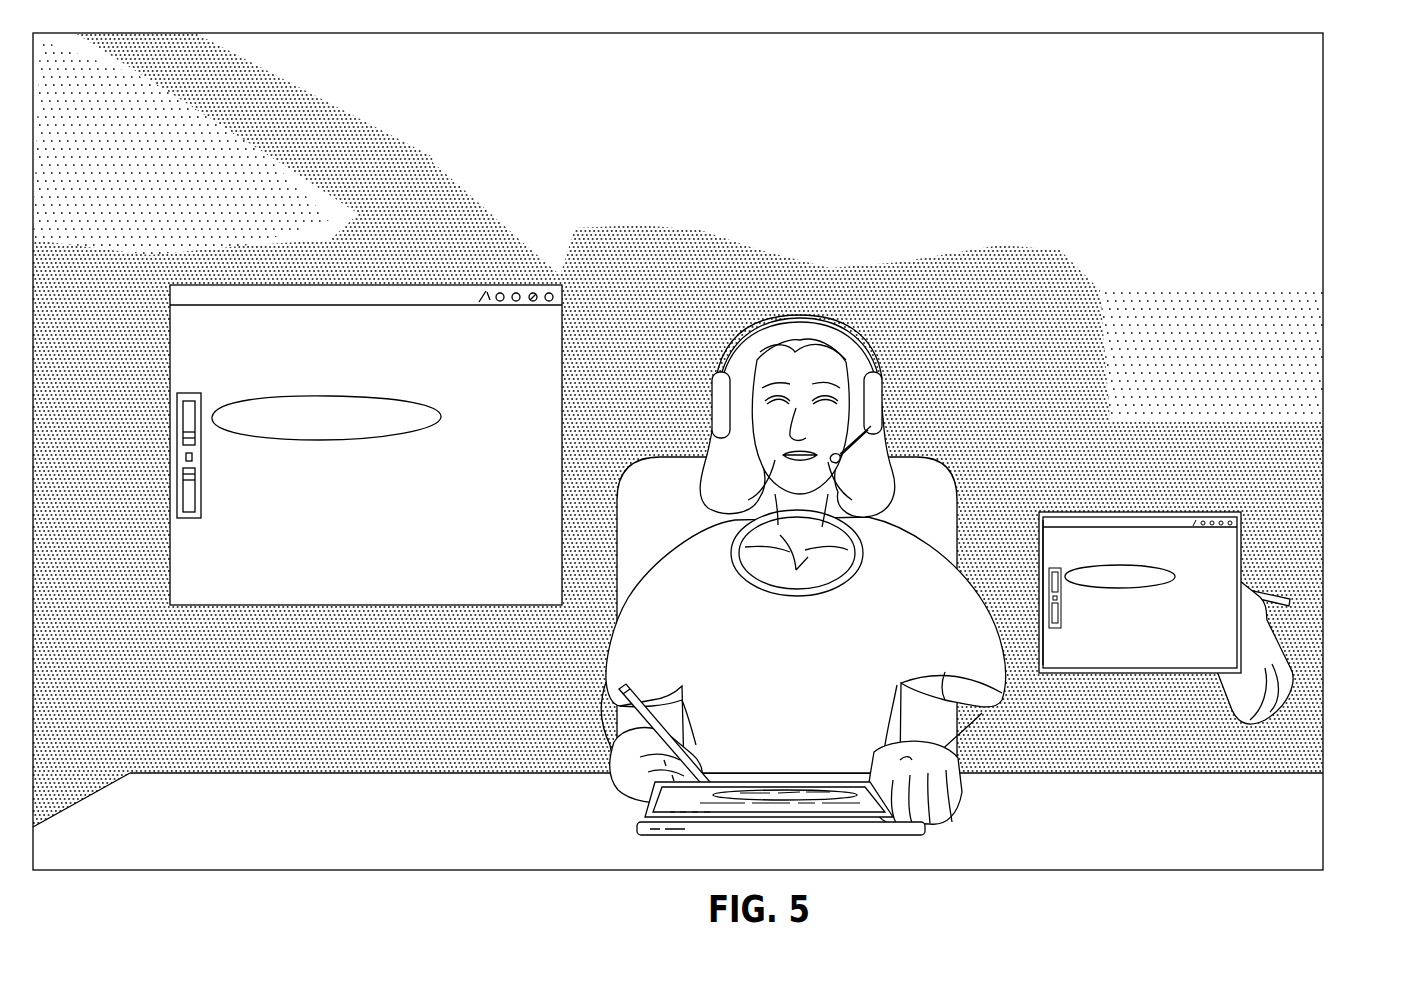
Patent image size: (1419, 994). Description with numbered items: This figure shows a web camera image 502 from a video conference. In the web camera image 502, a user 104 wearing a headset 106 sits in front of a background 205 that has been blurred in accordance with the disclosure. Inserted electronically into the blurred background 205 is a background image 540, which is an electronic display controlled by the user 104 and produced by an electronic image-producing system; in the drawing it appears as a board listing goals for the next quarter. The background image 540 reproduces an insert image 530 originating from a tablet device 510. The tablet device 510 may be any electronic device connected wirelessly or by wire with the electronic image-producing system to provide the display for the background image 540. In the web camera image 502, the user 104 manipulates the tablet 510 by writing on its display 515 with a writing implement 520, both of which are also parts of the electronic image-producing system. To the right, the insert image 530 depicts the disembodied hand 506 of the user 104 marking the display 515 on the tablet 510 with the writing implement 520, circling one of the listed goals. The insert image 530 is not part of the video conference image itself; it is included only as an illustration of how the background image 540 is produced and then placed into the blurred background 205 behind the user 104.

The user 104 is at (670, 550).
The headset 106 is at (838, 322).
The background 205 is at (131, 145).
The web camera image 502 is at (1325, 85).
The disembodied hand 506 is at (1290, 676).
The tablet device 510 is at (923, 828).
The display 515 is at (657, 800).
The writing implement 520 is at (658, 725).
The insert image 530 is at (1222, 532).
The background image 540 is at (537, 285).